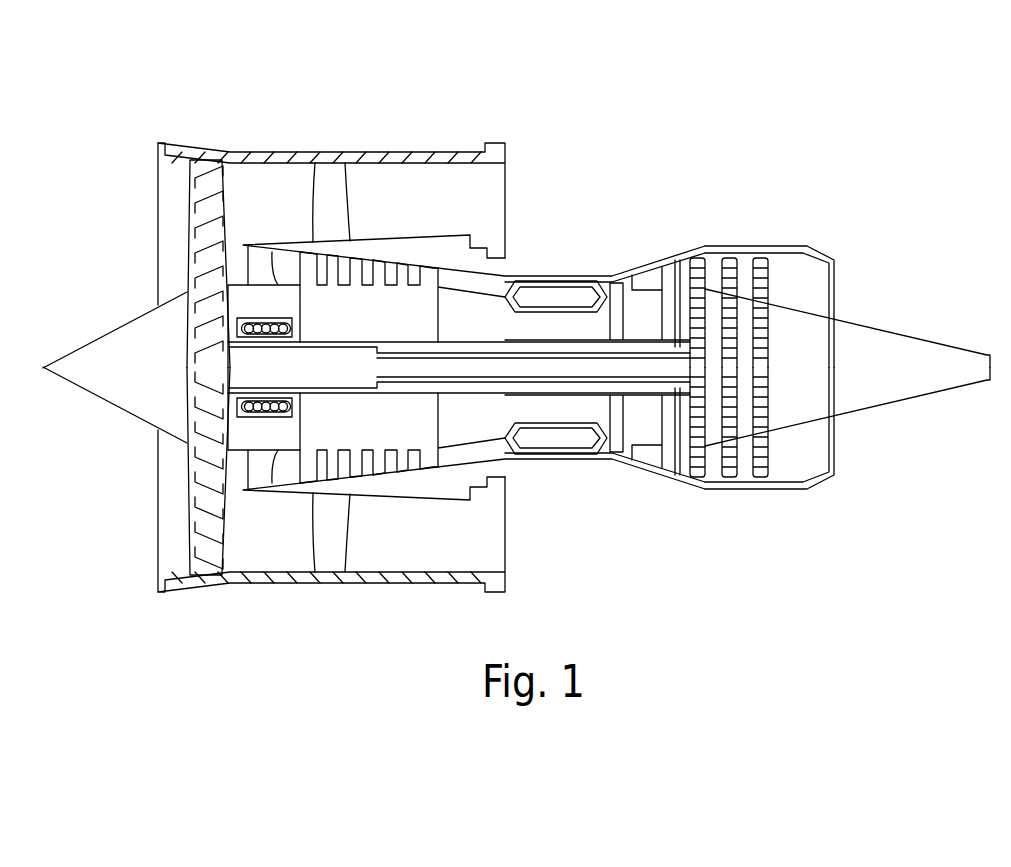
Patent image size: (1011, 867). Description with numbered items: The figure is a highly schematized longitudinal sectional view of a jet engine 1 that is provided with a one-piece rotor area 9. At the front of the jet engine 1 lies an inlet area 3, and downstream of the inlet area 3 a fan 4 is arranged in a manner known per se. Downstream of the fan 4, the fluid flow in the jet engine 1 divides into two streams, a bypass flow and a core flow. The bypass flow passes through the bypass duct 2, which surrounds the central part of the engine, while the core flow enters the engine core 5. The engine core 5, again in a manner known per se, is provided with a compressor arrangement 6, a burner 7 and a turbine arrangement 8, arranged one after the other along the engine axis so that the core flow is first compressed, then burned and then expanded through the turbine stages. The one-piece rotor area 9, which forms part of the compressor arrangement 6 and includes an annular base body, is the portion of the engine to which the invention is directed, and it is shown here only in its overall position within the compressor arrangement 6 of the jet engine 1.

The jet engine 1 is at (362, 118).
The bypass duct 2 is at (443, 167).
The inlet area 3 is at (173, 245).
The fan 4 is at (218, 158).
The engine core 5 is at (285, 472).
The compressor arrangement 6 is at (367, 490).
The burner 7 is at (592, 454).
The turbine arrangement 8 is at (697, 488).
The one-piece rotor area 9 is at (303, 482).